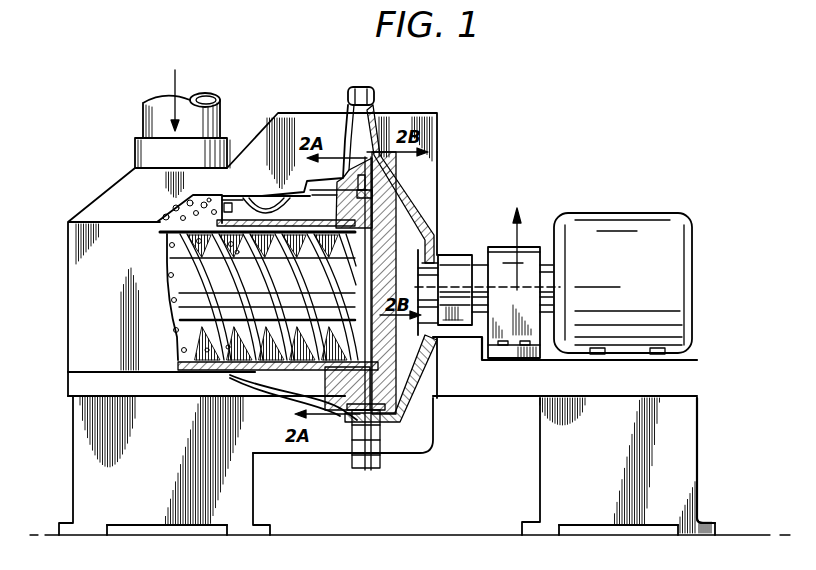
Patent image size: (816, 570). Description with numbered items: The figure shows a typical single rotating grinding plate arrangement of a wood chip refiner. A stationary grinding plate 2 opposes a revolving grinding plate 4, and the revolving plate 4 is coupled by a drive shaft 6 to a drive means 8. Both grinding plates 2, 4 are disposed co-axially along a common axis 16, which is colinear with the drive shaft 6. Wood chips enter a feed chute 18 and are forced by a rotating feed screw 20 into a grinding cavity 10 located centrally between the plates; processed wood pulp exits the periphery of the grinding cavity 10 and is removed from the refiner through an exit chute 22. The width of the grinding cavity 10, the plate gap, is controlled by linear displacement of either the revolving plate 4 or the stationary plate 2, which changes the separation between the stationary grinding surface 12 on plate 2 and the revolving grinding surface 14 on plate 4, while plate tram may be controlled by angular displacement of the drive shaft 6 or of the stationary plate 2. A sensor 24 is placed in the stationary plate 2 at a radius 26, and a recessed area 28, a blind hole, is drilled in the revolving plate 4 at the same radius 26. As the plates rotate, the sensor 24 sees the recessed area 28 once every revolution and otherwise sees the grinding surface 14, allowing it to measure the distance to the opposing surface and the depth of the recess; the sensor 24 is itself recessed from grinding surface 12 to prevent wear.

The stationary grinding plate 2 is at (328, 205).
The revolving grinding plate 4 is at (398, 223).
The drive shaft 6 is at (478, 262).
The drive means 8 is at (633, 213).
The grinding cavity 10 is at (347, 165).
The stationary grinding surface 12 is at (418, 195).
The revolving grinding surface 14 is at (327, 298).
The common axis 16 is at (523, 262).
The feed chute 18 is at (157, 122).
The rotating feed screw 20 is at (183, 292).
The exit chute 22 is at (378, 103).
The sensor 24 is at (315, 181).
The radius 26 is at (527, 222).
The recessed area 28 is at (373, 194).